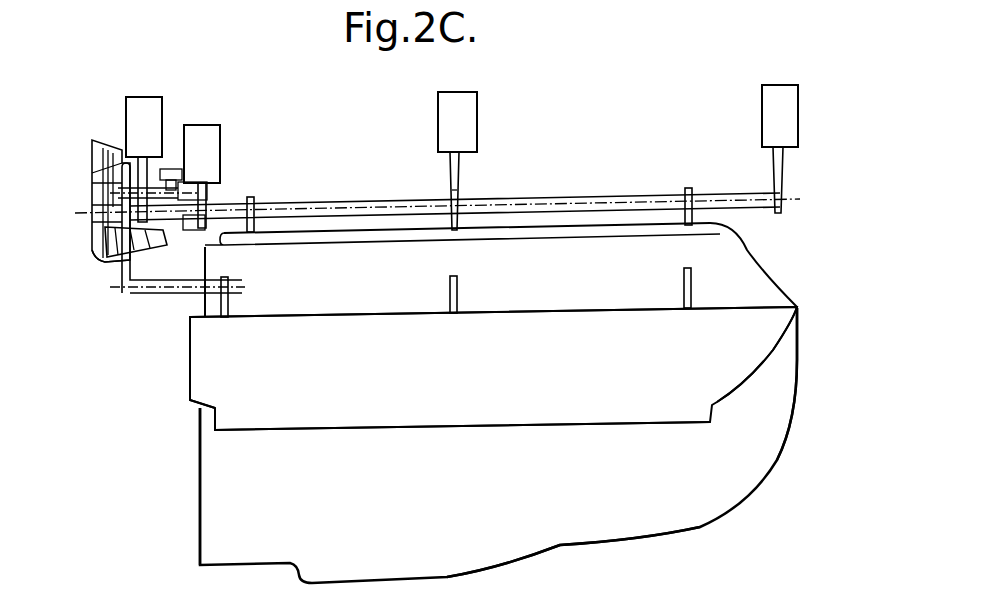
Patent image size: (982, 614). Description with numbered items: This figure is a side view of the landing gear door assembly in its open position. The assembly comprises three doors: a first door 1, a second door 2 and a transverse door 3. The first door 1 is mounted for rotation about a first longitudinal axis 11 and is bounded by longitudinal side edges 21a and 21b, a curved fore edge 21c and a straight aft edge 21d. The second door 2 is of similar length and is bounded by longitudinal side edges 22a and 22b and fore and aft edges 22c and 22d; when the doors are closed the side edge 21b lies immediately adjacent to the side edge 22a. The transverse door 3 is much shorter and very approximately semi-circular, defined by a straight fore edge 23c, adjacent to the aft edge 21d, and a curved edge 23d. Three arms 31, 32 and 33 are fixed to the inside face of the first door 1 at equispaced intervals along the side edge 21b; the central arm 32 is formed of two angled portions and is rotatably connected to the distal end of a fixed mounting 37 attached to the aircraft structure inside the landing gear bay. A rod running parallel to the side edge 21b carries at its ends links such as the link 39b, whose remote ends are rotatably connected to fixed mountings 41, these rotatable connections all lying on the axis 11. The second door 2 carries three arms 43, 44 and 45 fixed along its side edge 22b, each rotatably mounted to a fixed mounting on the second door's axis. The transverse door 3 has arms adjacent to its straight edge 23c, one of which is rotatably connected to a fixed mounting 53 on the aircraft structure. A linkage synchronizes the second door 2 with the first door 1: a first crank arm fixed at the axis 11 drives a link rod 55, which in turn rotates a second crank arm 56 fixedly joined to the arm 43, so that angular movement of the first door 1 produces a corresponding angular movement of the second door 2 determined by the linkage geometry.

The first door 1 is at (228, 540).
The second door 2 is at (475, 384).
The transverse door 3 is at (110, 183).
The first longitudinal axis 11 is at (786, 202).
The longitudinal side edge 21a is at (625, 545).
The longitudinal side edge 21b is at (740, 237).
The curved fore edge 21c is at (797, 372).
The straight aft edge 21d is at (200, 462).
The longitudinal side edge 22a is at (332, 428).
The longitudinal side edge 22b is at (357, 318).
The fore edge 22c is at (763, 362).
The aft edge 22d is at (190, 370).
The straight fore edge 23c is at (108, 267).
The curved edge 23d is at (122, 163).
The arm 31 is at (684, 215).
The central arm 32 is at (458, 227).
The arm 33 is at (263, 210).
The fixed mounting 37 is at (457, 100).
The link 39b is at (785, 177).
The fixed mounting 41 is at (768, 93).
The arm 43 is at (683, 287).
The arm 44 is at (455, 287).
The arm 45 is at (230, 307).
The fixed mounting 53 is at (205, 130).
The link rod 55 is at (102, 230).
The second crank arm 56 is at (153, 295).